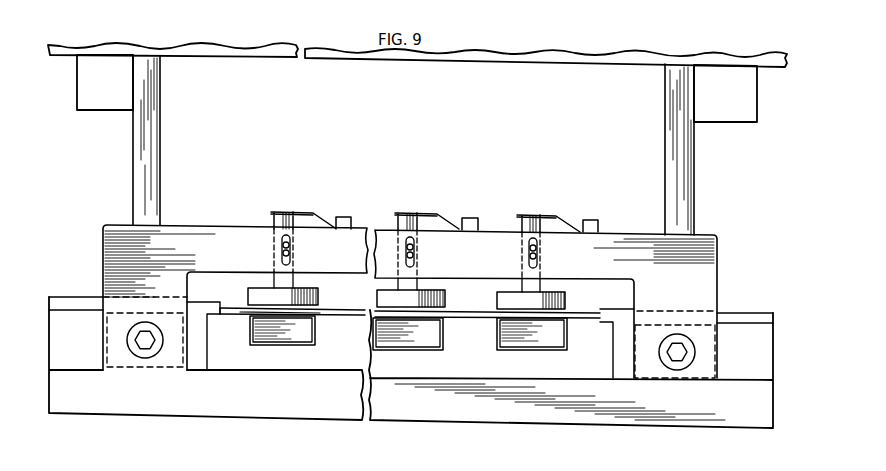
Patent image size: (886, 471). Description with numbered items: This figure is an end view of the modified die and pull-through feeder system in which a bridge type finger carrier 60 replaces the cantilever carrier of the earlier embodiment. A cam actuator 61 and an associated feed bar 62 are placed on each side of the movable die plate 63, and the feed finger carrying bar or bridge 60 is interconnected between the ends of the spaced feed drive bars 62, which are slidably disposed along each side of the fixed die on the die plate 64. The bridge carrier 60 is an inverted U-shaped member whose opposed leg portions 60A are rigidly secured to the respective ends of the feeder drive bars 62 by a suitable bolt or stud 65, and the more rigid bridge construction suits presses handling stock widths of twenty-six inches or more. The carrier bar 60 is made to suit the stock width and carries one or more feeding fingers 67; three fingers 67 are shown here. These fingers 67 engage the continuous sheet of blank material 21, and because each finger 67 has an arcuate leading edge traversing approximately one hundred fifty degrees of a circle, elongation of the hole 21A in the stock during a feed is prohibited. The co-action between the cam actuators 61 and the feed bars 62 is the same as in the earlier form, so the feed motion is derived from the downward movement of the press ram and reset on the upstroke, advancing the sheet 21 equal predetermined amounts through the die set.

The movable die plate 63 is at (200, 48).
The cam actuator 61 is at (148, 180).
The bridge type finger carrier 60 is at (378, 220).
The feeding finger 67 is at (308, 219).
The continuous sheet of blank material 21 is at (325, 310).
The hole 21A is at (310, 315).
The fixed die plate 64 is at (283, 405).
The leg portion 60A is at (128, 336).
The bolt or stud 65 is at (139, 352).
The feed bar 62 is at (165, 372).